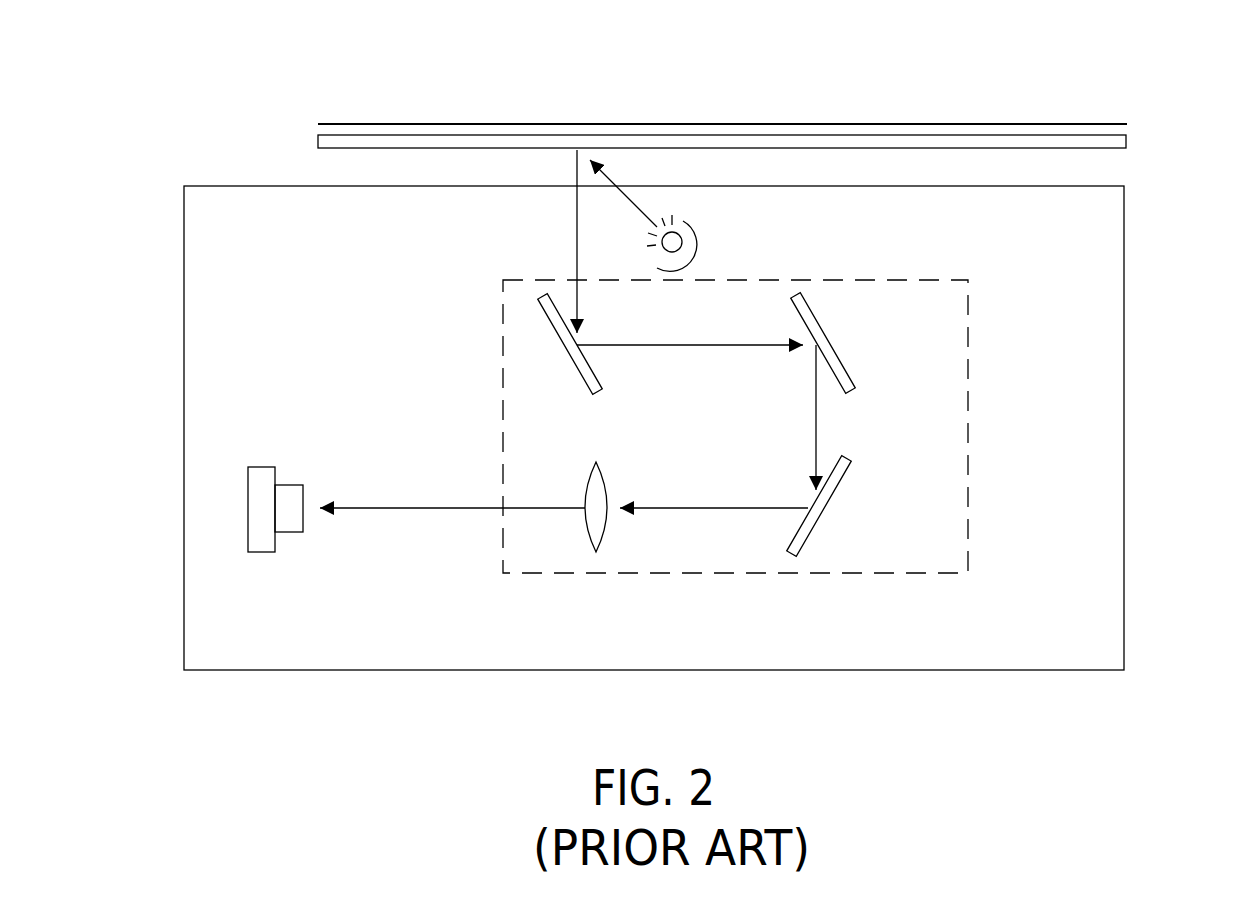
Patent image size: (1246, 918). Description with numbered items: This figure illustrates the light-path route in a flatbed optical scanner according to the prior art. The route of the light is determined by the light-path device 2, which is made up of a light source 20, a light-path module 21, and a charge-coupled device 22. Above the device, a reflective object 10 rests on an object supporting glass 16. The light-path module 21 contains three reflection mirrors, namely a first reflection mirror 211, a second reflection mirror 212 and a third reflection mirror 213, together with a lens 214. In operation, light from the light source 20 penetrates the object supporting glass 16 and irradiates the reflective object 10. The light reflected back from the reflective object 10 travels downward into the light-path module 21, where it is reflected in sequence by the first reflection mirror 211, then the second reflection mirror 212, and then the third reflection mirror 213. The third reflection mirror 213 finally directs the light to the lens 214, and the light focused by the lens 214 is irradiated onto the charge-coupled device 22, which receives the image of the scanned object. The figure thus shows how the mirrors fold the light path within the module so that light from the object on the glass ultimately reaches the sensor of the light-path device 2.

The light-path device 2 is at (1118, 438).
The reflective object 10 is at (1105, 122).
The object supporting glass 16 is at (1127, 140).
The light source 20 is at (695, 242).
The light-path module 21 is at (958, 389).
The first reflection mirror 211 is at (560, 338).
The second reflection mirror 212 is at (820, 338).
The third reflection mirror 213 is at (827, 505).
The lens 214 is at (600, 535).
The charge-coupled device 22 is at (285, 528).